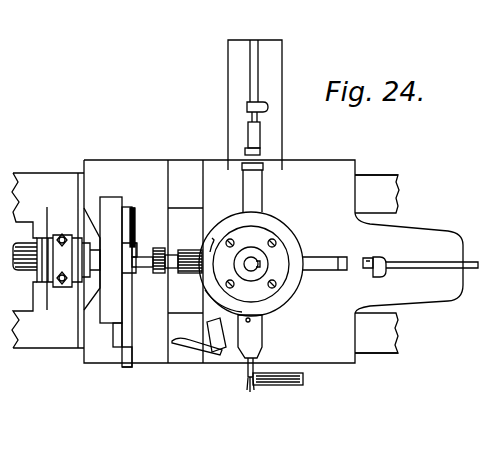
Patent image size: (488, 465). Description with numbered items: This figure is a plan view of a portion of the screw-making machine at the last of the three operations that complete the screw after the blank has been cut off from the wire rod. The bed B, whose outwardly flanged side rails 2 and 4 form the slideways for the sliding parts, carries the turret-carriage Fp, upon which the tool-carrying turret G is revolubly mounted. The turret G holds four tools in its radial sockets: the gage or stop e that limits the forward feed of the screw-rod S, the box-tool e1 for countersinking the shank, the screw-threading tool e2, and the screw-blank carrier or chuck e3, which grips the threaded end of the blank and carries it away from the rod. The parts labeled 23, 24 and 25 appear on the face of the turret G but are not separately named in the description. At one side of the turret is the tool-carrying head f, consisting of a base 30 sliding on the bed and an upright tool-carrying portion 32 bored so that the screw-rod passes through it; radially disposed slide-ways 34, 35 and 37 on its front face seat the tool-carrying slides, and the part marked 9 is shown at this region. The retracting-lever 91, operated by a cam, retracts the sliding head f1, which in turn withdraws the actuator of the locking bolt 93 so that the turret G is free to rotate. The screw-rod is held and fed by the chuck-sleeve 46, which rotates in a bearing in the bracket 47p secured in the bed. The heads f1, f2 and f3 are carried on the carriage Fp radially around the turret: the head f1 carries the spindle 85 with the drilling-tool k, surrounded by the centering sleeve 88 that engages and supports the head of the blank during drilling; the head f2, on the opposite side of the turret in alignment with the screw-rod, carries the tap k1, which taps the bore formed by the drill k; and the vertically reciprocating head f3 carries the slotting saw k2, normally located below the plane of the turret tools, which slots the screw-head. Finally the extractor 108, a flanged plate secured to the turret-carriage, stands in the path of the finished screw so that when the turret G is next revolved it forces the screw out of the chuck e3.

The side rail 2 is at (376, 186).
The side rail 4 is at (378, 346).
The bed B is at (410, 202).
The turret-carriage Fp is at (273, 261).
The spindle 85 is at (250, 88).
The drilling-tool k is at (251, 117).
The tool-carrying head f1 is at (260, 134).
The centering sleeve 88 is at (245, 150).
The box-tool e1 is at (262, 193).
The screw-threading tool e2 is at (190, 252).
The screw-blank carrier or chuck e3 is at (260, 332).
The gage or stop e is at (330, 259).
The tool-carrying turret G is at (288, 237).
The dial ring 24 is at (266, 240).
The hub 23 is at (252, 270).
The screws 25 is at (277, 270).
The screw-rod S is at (146, 268).
The bracket 9 is at (134, 256).
The retracting-lever 91 is at (131, 210).
The bolt 93 is at (122, 355).
The slide-way 34 is at (135, 245).
The slide-way 35 is at (134, 219).
The base 30 is at (136, 269).
The upright or tool-carrying portion 32 is at (108, 198).
The slide-way 37 is at (130, 338).
The tool-carrying head f is at (109, 251).
The chuck-sleeve 46 is at (25, 250).
The bracket 47p is at (50, 258).
The extractor 108 is at (198, 348).
The tap k1 is at (366, 258).
The slotting saw k2 is at (249, 385).
The tool-carrying head f2 is at (389, 262).
The tool-carrying head f3 is at (278, 392).